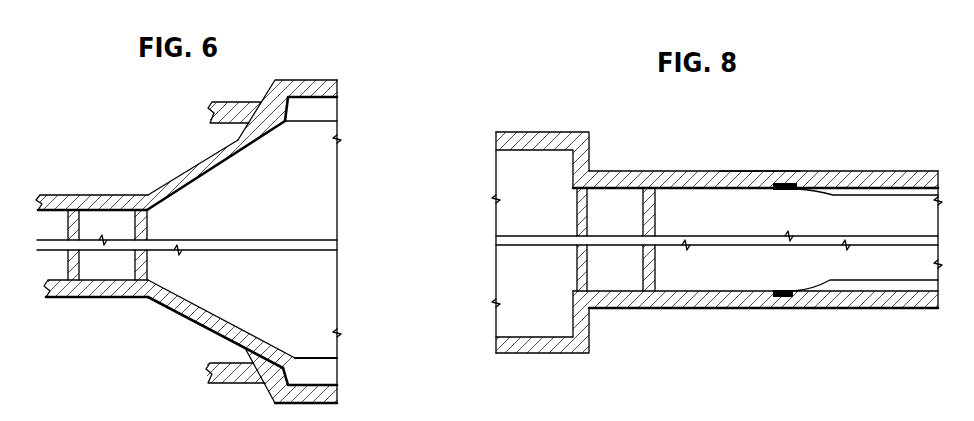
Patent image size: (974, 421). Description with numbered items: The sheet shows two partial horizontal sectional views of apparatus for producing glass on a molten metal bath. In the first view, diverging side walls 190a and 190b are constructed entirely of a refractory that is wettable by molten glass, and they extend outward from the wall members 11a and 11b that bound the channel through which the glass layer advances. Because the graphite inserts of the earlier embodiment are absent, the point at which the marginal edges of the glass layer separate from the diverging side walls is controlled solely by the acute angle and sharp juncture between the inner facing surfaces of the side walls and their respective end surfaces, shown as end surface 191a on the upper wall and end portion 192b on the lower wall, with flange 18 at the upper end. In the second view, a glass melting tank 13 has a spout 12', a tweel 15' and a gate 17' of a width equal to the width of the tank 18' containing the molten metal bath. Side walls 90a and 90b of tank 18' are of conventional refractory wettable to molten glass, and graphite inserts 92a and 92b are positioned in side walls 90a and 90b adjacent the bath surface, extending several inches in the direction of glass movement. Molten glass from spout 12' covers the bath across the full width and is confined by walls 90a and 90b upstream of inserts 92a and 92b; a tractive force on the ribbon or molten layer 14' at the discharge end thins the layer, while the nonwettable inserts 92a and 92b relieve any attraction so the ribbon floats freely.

In FIG. 6, the upper wall member 11a is at (103, 195).
In FIG. 6, the lower wall member 11b is at (95, 298).
In FIG. 6, the flange 18 is at (272, 105).
In FIG. 6, the diverging side wall 190a is at (213, 168).
In FIG. 6, the diverging side wall 190b is at (243, 302).
In FIG. 6, the end surface 191a is at (295, 120).
In FIG. 6, the lower end portion 192b is at (297, 362).
In FIG. 8, the end block 13 is at (530, 132).
In FIG. 8, the spout 12' is at (755, 220).
In FIG. 8, the tweel 15' is at (555, 239).
In FIG. 8, the gate 17' is at (626, 239).
In FIG. 8, the tank 18' is at (760, 157).
In FIG. 8, the ribbon or molten layer 14' is at (867, 169).
In FIG. 8, the side wall 90a is at (800, 171).
In FIG. 8, the side wall 90b is at (828, 305).
In FIG. 8, the graphite insert 92a is at (785, 190).
In FIG. 8, the graphite insert 92b is at (776, 290).